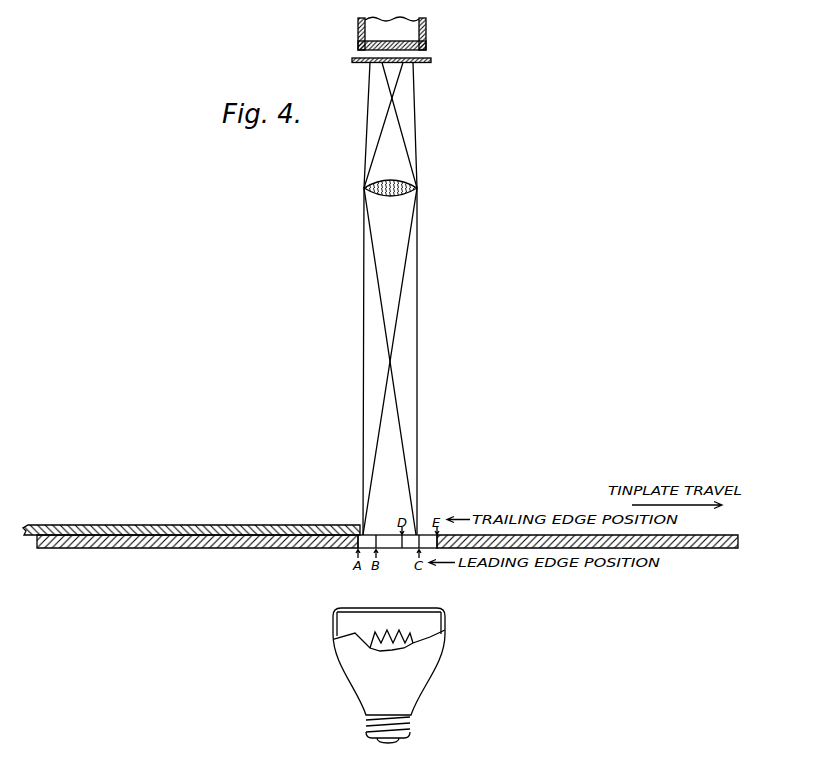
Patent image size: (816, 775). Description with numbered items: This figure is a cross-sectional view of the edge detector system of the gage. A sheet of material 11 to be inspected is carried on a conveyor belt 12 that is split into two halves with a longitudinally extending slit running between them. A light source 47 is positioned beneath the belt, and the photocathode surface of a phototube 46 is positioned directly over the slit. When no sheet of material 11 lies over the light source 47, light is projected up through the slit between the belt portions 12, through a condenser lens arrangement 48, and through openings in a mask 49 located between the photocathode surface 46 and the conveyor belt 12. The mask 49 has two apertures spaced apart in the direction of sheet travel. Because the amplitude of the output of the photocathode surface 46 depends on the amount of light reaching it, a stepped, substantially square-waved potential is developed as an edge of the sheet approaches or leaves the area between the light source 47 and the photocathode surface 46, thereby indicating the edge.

The material to be inspected 11 is at (284, 525).
The conveyor belt portion 12 is at (716, 549).
The phototube 46 is at (412, 49).
The light source 47 is at (440, 663).
The condenser lens arrangement 48 is at (417, 188).
The mask 49 is at (426, 63).